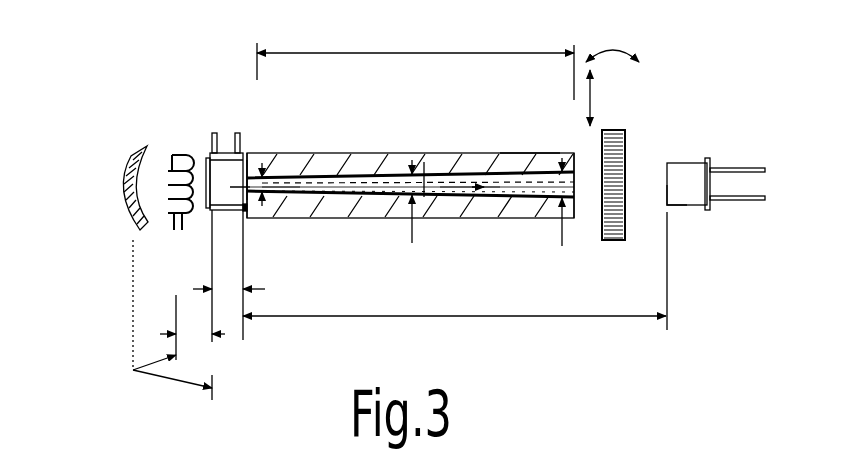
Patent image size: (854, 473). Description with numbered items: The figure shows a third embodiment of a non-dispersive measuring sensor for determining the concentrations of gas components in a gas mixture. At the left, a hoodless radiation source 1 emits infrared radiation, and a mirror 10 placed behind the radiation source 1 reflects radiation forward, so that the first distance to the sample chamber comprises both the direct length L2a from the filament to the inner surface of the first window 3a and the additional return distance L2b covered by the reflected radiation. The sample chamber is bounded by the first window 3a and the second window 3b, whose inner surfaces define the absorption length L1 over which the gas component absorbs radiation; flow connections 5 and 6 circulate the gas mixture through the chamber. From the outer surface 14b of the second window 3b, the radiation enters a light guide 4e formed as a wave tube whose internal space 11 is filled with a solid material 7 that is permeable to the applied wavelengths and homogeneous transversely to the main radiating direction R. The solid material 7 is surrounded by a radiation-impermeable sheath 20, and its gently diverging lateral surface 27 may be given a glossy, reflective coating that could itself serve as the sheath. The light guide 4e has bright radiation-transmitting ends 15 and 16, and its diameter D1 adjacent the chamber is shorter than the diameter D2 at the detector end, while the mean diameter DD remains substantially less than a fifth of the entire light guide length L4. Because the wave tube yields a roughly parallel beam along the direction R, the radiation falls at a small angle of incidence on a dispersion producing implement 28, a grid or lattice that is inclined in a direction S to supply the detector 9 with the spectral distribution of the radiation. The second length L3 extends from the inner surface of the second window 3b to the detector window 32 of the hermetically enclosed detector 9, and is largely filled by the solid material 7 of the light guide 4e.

The mirror 10 is at (129, 156).
The radiation source 1 is at (194, 160).
The first window 3a is at (207, 193).
The second window 3b is at (245, 213).
The flow connection 5 is at (214, 129).
The flow connection 6 is at (238, 129).
The radiation-transmitting end 15 is at (251, 156).
The outer surface of second window 14b is at (257, 158).
The internal space 11 is at (306, 184).
The sheath 20 is at (345, 162).
The solid material 7 is at (378, 182).
The main radiating direction R is at (425, 173).
The lateral surface 27 is at (509, 182).
The light guide 4e is at (533, 150).
The radiation-transmitting end 16 is at (582, 172).
The inclination direction S is at (612, 88).
The dispersion producing implement 28 is at (620, 137).
The detector 9 is at (685, 178).
The detector window 32 is at (669, 195).
The light guide diameter D1 is at (265, 207).
The mean diameter DD is at (431, 217).
The light guide diameter D2 is at (578, 217).
The light guide length L4 is at (415, 61).
The second length L3 is at (454, 335).
The absorption length L1 is at (229, 309).
The first sub-length L2a is at (192, 356).
The second sub-length L2b is at (172, 387).